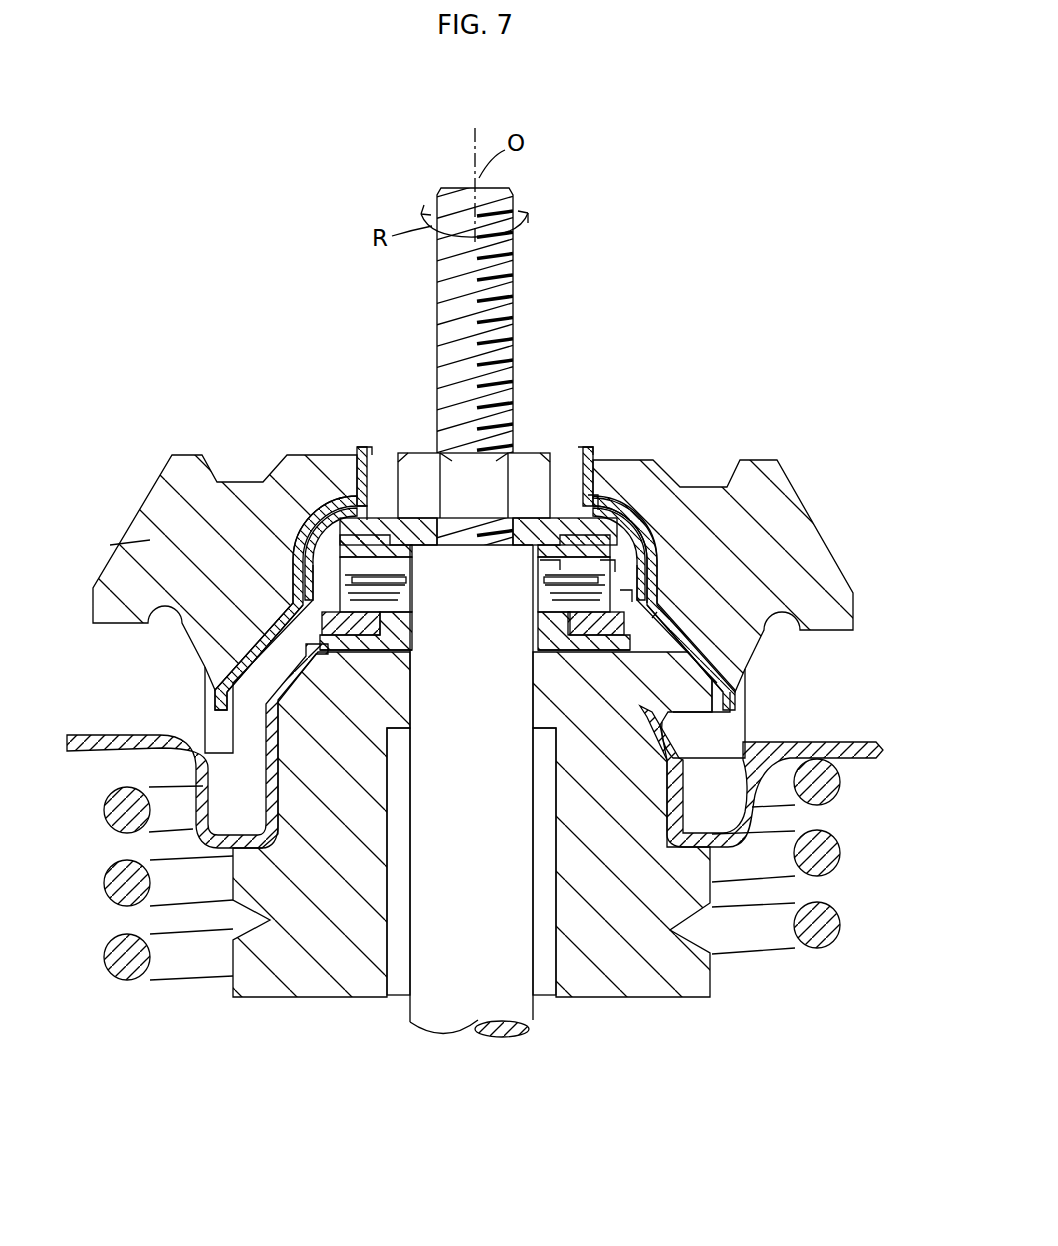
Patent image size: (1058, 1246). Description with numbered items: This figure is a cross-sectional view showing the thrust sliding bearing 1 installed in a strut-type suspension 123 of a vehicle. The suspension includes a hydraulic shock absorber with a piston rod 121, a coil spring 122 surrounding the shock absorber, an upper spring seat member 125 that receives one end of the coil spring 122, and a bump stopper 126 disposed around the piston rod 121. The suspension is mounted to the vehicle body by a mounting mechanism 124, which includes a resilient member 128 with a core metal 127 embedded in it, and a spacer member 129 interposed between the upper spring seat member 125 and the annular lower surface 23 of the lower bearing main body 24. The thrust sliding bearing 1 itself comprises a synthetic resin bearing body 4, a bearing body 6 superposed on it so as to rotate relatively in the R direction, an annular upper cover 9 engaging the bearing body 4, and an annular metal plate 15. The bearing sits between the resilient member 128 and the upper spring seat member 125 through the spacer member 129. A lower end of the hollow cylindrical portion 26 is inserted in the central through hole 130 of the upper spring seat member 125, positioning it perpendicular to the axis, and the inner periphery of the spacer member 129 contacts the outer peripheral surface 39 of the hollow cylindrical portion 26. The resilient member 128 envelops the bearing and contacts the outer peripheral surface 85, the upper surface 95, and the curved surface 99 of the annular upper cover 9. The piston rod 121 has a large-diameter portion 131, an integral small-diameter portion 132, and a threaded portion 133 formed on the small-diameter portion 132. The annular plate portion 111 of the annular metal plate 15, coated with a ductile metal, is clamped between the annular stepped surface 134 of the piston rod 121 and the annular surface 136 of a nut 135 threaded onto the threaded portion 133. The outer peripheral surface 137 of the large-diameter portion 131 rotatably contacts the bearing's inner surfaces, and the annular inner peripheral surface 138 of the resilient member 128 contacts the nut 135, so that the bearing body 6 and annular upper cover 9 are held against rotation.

The thrust sliding bearing 1 is at (317, 533).
The bearing body 4 is at (650, 606).
The bearing body 6 is at (609, 478).
The annular upper cover 9 is at (333, 540).
The annular metal plate 15 is at (352, 490).
The annular lower surface 23 is at (287, 652).
The lower bearing main body 24 is at (305, 628).
The hollow cylindrical portion 26 is at (392, 613).
The outer peripheral surface 39 is at (567, 627).
The outer peripheral surface 85 is at (641, 573).
The upper surface 95 is at (613, 472).
The curved surface 99 is at (652, 575).
The annular plate portion 111 is at (565, 492).
The piston rod 121 is at (440, 1007).
The coil spring 122 is at (820, 940).
The strut-type suspension 123 is at (252, 1009).
The mounting mechanism 124 is at (147, 485).
The upper spring seat member 125 is at (784, 744).
The bump stopper 126 is at (637, 968).
The core metal 127 is at (656, 464).
The resilient member 128 is at (148, 538).
The spacer member 129 is at (641, 632).
The central through hole 130 is at (407, 641).
The large-diameter portion 131 is at (447, 918).
The small-diameter portion 132 is at (498, 305).
The threaded portion 133 is at (447, 317).
The annular stepped surface 134 is at (519, 490).
The nut 135 is at (428, 470).
The annular surface 136 is at (370, 455).
The outer peripheral surface 137 is at (536, 937).
The annular inner peripheral surface 138 is at (391, 460).